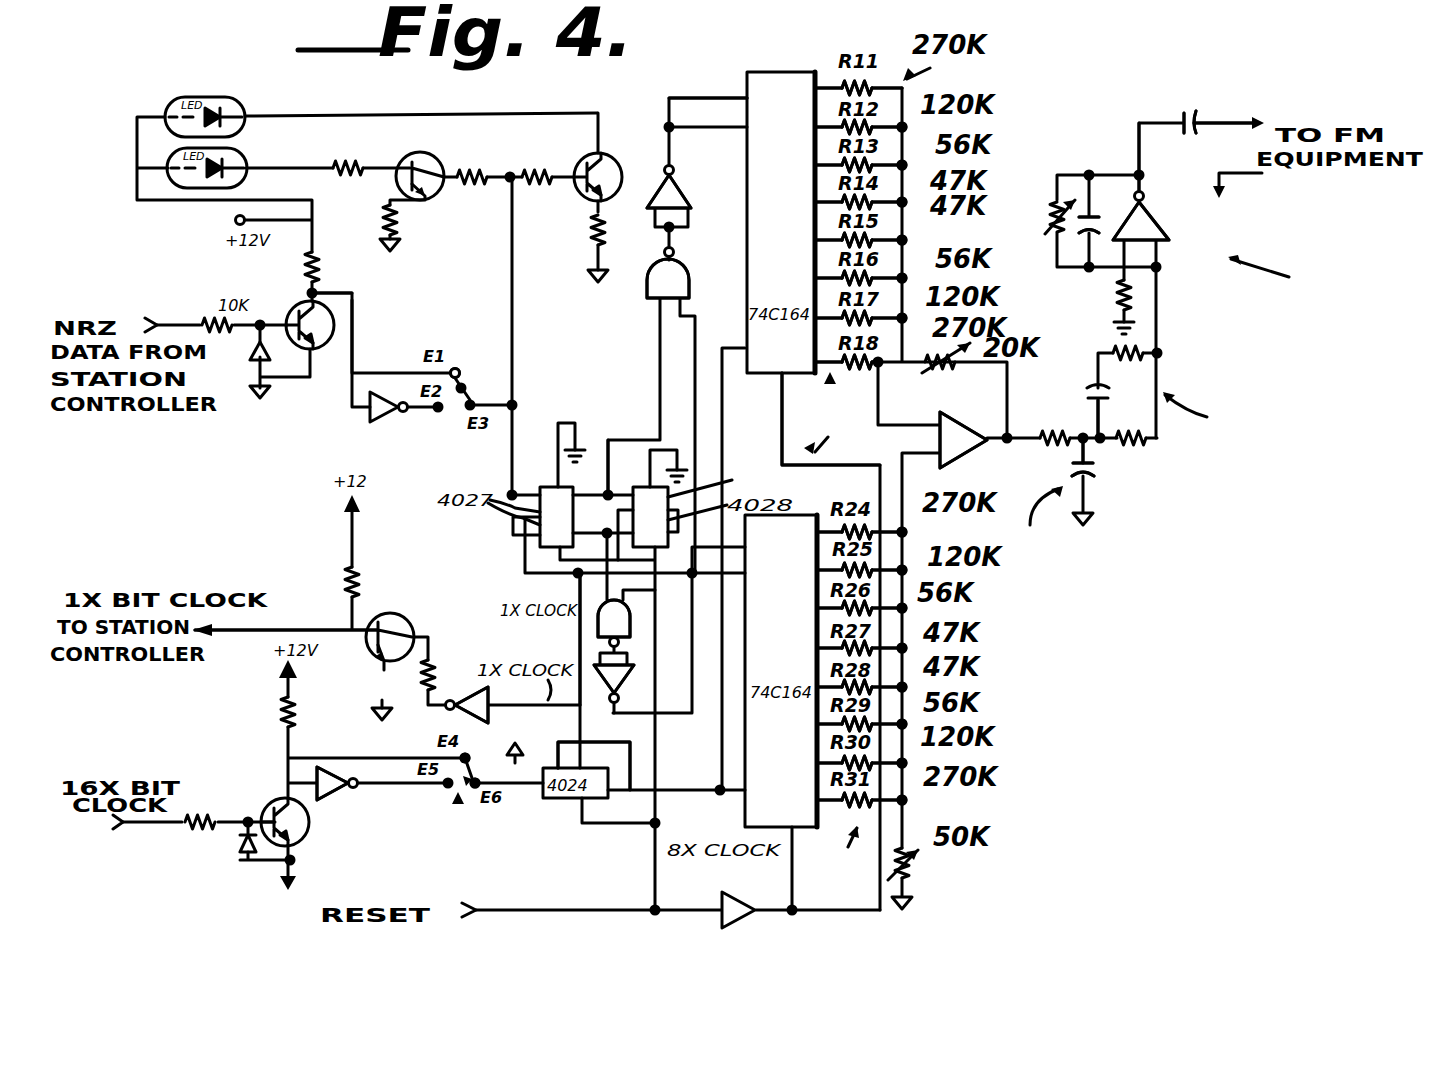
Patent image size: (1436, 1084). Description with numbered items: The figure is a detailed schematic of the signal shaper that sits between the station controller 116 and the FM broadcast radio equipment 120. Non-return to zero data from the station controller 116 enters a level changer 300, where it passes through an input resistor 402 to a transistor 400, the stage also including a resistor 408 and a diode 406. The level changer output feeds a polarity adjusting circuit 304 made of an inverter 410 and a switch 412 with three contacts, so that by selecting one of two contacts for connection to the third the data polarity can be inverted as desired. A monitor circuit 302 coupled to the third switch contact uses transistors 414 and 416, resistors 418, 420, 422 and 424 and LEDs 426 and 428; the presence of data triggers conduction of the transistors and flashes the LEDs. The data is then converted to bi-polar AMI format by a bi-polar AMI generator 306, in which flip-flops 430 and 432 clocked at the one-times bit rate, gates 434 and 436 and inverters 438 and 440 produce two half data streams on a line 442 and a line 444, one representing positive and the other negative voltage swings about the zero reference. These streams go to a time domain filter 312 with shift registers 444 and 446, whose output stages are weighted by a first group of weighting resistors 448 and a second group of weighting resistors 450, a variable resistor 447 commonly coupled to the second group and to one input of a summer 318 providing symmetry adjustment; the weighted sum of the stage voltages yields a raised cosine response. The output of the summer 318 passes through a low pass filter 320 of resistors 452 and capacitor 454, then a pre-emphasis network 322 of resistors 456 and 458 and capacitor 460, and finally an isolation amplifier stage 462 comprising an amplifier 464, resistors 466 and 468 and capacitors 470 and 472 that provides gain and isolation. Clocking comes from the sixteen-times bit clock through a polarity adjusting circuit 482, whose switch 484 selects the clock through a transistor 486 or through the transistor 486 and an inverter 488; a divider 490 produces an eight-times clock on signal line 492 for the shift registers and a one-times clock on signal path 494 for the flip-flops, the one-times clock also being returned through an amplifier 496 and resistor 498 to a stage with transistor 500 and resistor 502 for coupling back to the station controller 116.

The station controller 116 is at (237, 540).
The FM broadcast radio equipment 120 is at (1314, 158).
The level changer 300 is at (337, 404).
The monitor circuit 302 is at (510, 151).
The polarity adjusting circuit 304 is at (440, 451).
The bi-polar AMI generator 306 is at (640, 414).
The time domain filter 312 is at (853, 436).
The summer 318 is at (983, 382).
The low pass filter 320 is at (1100, 558).
The pre-emphasis network 322 is at (1273, 438).
The transistor 400 is at (368, 282).
The input resistor 402 is at (196, 320).
The diode 406 is at (245, 370).
The resistor 408 is at (303, 262).
The inverter 410 is at (377, 375).
The switch 412 is at (471, 383).
The transistor 414 is at (430, 198).
The transistor 416 is at (580, 190).
The resistor 418 is at (368, 158).
The resistor 420 is at (471, 194).
The resistor 422 is at (560, 155).
The resistor 424 is at (590, 253).
The LED 426 is at (247, 100).
The LED 428 is at (195, 187).
The flip-flop 430 is at (503, 493).
The flip-flop 432 is at (729, 491).
The gate 434 is at (655, 288).
The gate 436 is at (608, 622).
The inverter 438 is at (667, 205).
The inverter 440 is at (639, 702).
The line 442 is at (653, 143).
The shift register 444 is at (805, 238).
The shift register 446 is at (810, 567).
The variable resistor 447 is at (915, 857).
The first group of weighting resistors 448 is at (907, 79).
The second group of weighting resistors 450 is at (855, 709).
The resistor 452 is at (1059, 435).
The capacitor 454 is at (1101, 478).
The resistor 456 is at (1142, 445).
The resistor 458 is at (1140, 365).
The capacitor 460 is at (1082, 358).
The isolation amplifier stage 462 is at (1369, 295).
The amplifier 464 is at (1173, 227).
The resistor 466 is at (1128, 297).
The resistor 468 is at (1043, 225).
The capacitor 470 is at (1086, 172).
The capacitor 472 is at (1203, 116).
The polarity adjusting circuit 482 is at (437, 821).
The switch 484 is at (458, 795).
The transistor 486 is at (269, 795).
The inverter 488 is at (338, 795).
The divider 490 is at (575, 805).
The signal line 492 is at (632, 724).
The signal path 494 is at (580, 583).
The amplifier 496 is at (504, 716).
The resistor 498 is at (447, 654).
The transistor 500 is at (373, 627).
The resistor 502 is at (352, 573).